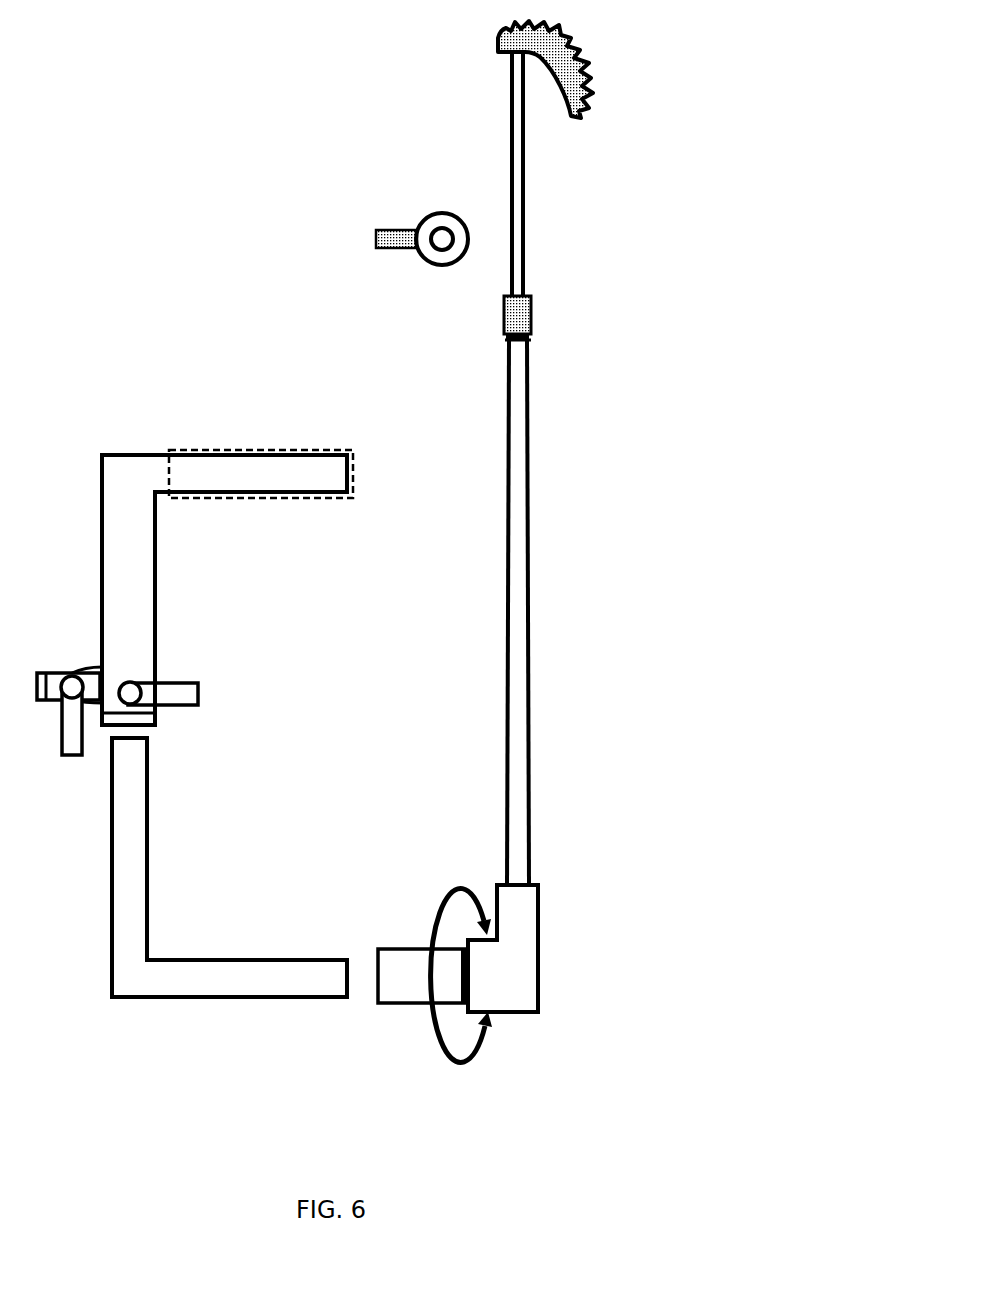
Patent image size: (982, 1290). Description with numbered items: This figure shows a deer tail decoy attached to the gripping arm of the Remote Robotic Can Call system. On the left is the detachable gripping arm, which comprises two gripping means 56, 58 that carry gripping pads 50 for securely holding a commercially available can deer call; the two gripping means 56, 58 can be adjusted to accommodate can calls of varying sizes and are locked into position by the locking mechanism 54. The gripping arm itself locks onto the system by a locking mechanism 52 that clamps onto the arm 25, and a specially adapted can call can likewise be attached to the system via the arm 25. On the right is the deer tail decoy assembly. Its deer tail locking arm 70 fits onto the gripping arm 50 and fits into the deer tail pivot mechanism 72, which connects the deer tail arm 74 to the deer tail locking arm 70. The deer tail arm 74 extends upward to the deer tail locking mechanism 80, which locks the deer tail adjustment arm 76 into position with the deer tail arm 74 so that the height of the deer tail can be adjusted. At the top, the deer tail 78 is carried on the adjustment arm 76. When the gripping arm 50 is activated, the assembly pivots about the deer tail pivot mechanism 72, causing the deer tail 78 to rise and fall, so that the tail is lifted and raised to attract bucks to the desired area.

The arm 25 is at (430, 918).
The gripping pads 50 is at (231, 443).
The locking mechanism 52 is at (72, 760).
The locking mechanism 54 is at (205, 694).
The gripping means 56 is at (168, 579).
The gripping means 58 is at (158, 867).
The deer tail locking arm 70 is at (373, 995).
The deer tail pivot mechanism 72 is at (550, 975).
The deer tail arm 74 is at (542, 502).
The deer tail adjustment arm 76 is at (530, 278).
The deer tail 78 is at (595, 52).
The deer tail locking mechanism 80 is at (522, 316).